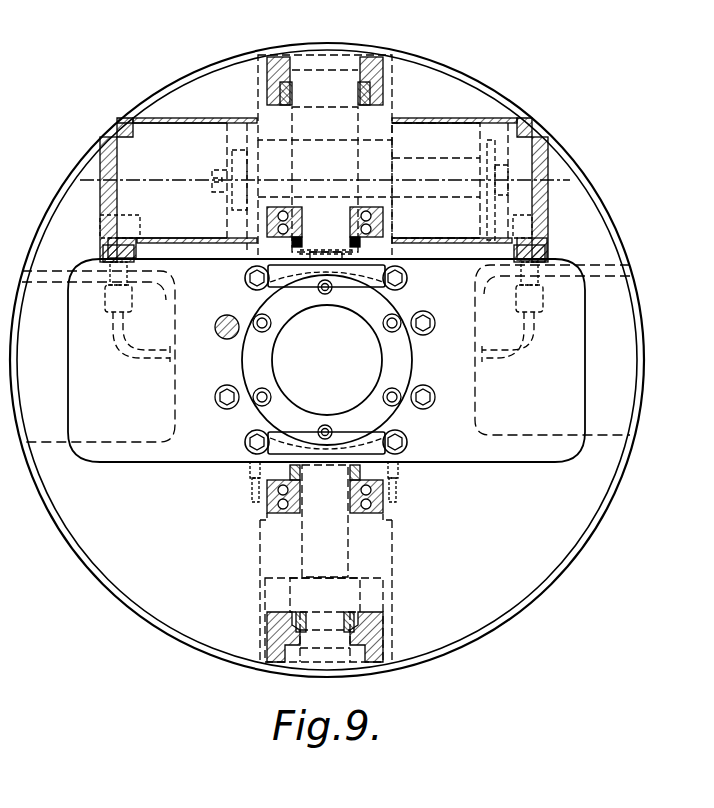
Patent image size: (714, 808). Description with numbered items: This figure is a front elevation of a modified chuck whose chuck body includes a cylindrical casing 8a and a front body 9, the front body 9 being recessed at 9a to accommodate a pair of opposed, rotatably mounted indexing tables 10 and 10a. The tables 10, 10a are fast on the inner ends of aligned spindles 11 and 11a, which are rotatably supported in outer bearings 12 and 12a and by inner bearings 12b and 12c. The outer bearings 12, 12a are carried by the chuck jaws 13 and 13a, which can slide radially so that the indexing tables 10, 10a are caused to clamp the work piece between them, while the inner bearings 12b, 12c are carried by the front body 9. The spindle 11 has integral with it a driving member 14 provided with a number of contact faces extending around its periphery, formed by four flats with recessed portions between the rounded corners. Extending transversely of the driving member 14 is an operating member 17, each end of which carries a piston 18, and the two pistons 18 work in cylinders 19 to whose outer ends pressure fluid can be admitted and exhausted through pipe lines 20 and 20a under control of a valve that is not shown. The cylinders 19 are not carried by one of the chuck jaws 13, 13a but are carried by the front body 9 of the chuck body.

The cylindrical casing 8a is at (134, 612).
The front body 9 is at (118, 560).
The recess 9a is at (326, 321).
The indexing table 10 is at (312, 276).
The indexing table 10a is at (297, 432).
The spindle 11 is at (286, 254).
The spindle 11a is at (310, 528).
The outer bearing 12 is at (384, 95).
The outer bearing 12a is at (385, 612).
The inner bearing 12b is at (393, 216).
The inner bearing 12c is at (385, 512).
The chuck jaw 13 is at (256, 68).
The chuck jaw 13a is at (268, 626).
The driving member 14 is at (232, 155).
The operating member 17 is at (370, 175).
The piston 18 is at (232, 205).
The cylinder 19 is at (192, 250).
The pipe line 20 is at (136, 356).
The pipe line 20a is at (529, 338).